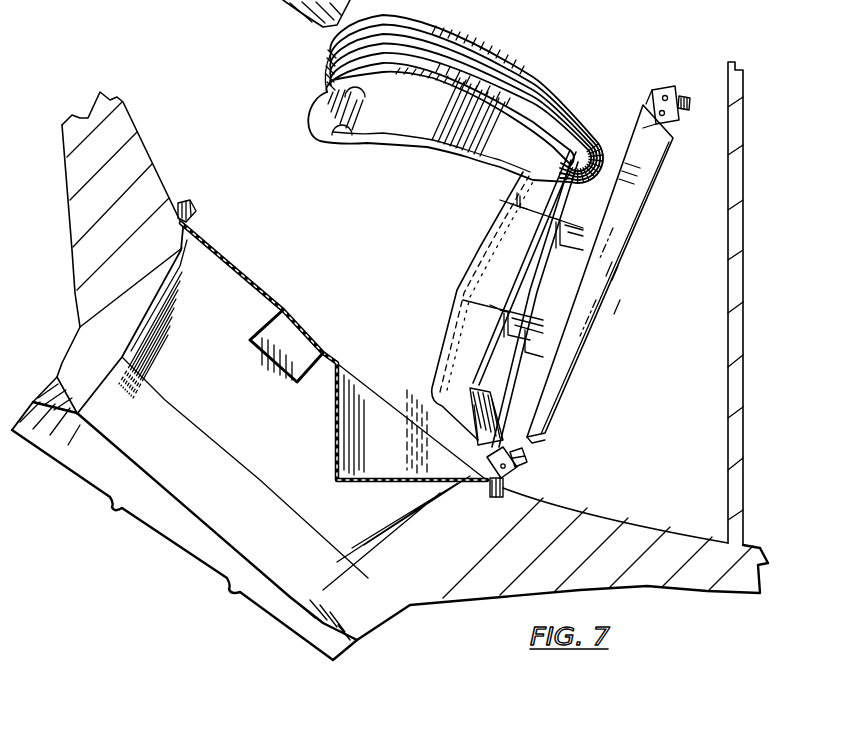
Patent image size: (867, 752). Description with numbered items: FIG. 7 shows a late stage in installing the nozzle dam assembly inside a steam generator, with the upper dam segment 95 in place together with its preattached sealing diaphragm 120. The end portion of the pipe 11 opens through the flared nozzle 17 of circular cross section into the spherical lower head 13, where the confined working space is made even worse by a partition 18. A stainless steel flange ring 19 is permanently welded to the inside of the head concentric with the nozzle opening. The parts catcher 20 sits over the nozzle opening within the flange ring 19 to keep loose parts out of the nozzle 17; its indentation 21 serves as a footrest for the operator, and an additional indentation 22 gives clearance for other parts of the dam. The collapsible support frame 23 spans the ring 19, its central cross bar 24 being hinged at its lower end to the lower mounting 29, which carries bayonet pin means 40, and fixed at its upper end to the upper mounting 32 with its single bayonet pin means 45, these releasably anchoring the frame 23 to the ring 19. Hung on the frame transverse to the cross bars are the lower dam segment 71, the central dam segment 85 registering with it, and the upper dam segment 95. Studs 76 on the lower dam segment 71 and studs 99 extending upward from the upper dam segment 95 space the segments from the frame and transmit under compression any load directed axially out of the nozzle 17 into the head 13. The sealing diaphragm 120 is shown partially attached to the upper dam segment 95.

The pipe 11 is at (28, 402).
The spherical lower head 13 is at (132, 133).
The flared nozzle 17 is at (142, 321).
The partition 18 is at (748, 185).
The flange ring 19 is at (178, 202).
The parts catcher 20 is at (232, 250).
The indentation 21 is at (400, 478).
The additional indentation 22 is at (272, 328).
The collapsible support frame 23 is at (606, 310).
The central cross bar 24 is at (607, 275).
The lower mounting 29 is at (510, 475).
The upper mounting 32 is at (662, 88).
The bayonet pin means 40 is at (525, 462).
The single bayonet pin means 45 is at (678, 112).
The lower dam segment 71 is at (482, 352).
The studs 76 is at (517, 397).
The central dam segment 85 is at (500, 257).
The upper dam segment 95 is at (543, 173).
The studs 99 is at (627, 133).
The sealing diaphragm 120 is at (318, 48).